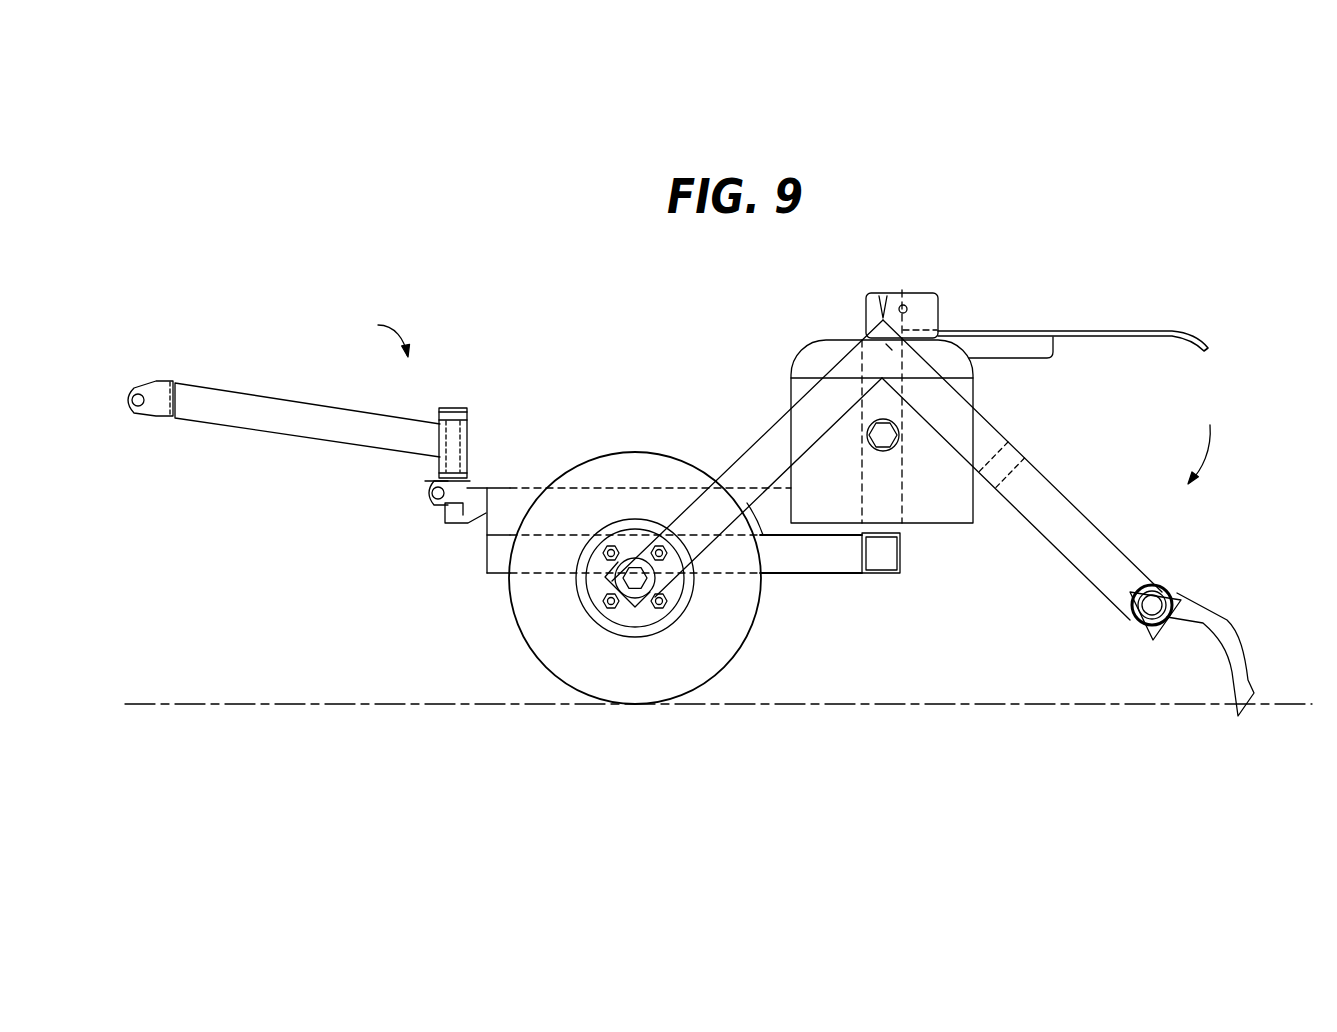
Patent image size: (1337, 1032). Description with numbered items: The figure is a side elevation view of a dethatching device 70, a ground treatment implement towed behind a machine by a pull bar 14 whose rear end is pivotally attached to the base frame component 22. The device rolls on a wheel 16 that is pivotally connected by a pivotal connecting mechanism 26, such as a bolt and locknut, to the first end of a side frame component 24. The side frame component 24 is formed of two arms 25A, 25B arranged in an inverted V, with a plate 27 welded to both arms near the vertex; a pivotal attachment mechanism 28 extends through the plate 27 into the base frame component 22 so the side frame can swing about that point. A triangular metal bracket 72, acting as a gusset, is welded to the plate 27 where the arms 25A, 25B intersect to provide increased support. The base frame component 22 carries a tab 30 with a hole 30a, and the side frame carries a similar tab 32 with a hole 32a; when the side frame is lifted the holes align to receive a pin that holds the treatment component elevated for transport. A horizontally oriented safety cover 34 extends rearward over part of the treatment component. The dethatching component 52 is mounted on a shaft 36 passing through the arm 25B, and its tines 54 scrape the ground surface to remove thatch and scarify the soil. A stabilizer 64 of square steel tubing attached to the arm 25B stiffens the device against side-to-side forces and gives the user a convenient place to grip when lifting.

The pull bar 14 is at (316, 427).
The wheel 16 is at (544, 640).
The base frame component 22 is at (783, 580).
The side frame component 24 is at (887, 467).
The arm 25A is at (812, 403).
The arm 25B is at (1063, 500).
The pivotal connecting mechanism 26 is at (637, 582).
The plate 27 is at (842, 504).
The pivotal attachment mechanism 28 is at (882, 436).
The tab 30 is at (865, 299).
The hole 30a is at (878, 298).
The tab 32 is at (925, 293).
The hole 32a is at (908, 309).
The safety cover 34 is at (1113, 330).
The shaft 36 is at (1145, 630).
The dethatching component 52 is at (1207, 438).
The tine 54 is at (1212, 622).
The stabilizer 64 is at (1020, 462).
The dethatching device 70 is at (374, 332).
The triangular metal bracket 72 is at (890, 347).